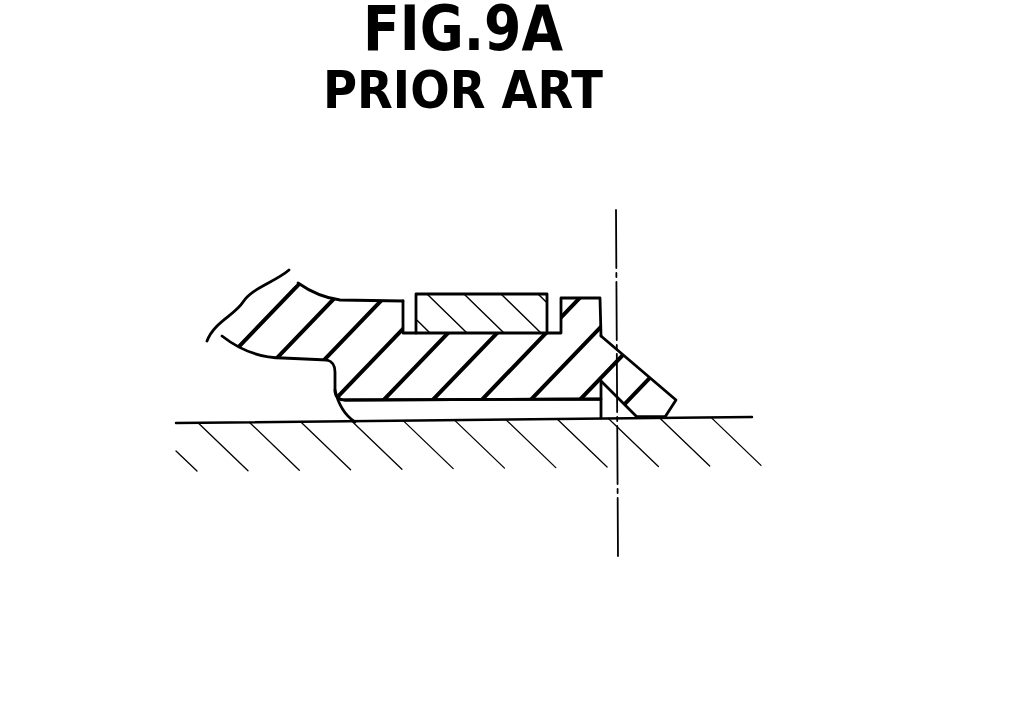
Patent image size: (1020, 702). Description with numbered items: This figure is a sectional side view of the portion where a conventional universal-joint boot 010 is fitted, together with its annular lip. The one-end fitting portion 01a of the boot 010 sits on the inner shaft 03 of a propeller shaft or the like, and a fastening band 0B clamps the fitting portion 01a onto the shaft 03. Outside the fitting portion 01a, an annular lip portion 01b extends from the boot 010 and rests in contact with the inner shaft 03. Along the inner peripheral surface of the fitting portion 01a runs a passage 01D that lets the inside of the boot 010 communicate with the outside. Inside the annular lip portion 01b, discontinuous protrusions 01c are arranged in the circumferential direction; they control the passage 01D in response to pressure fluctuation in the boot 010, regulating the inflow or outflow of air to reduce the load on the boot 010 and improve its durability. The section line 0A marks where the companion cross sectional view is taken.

The section line 0A is at (617, 386).
The inner shaft 03 is at (330, 452).
The boot 010 is at (310, 293).
The fastening band 0B is at (435, 294).
The one-end fitting portion 01a is at (466, 360).
The annular lip portion 01b is at (627, 378).
The discontinuous protrusions 01c is at (647, 418).
The passage 01D is at (477, 406).